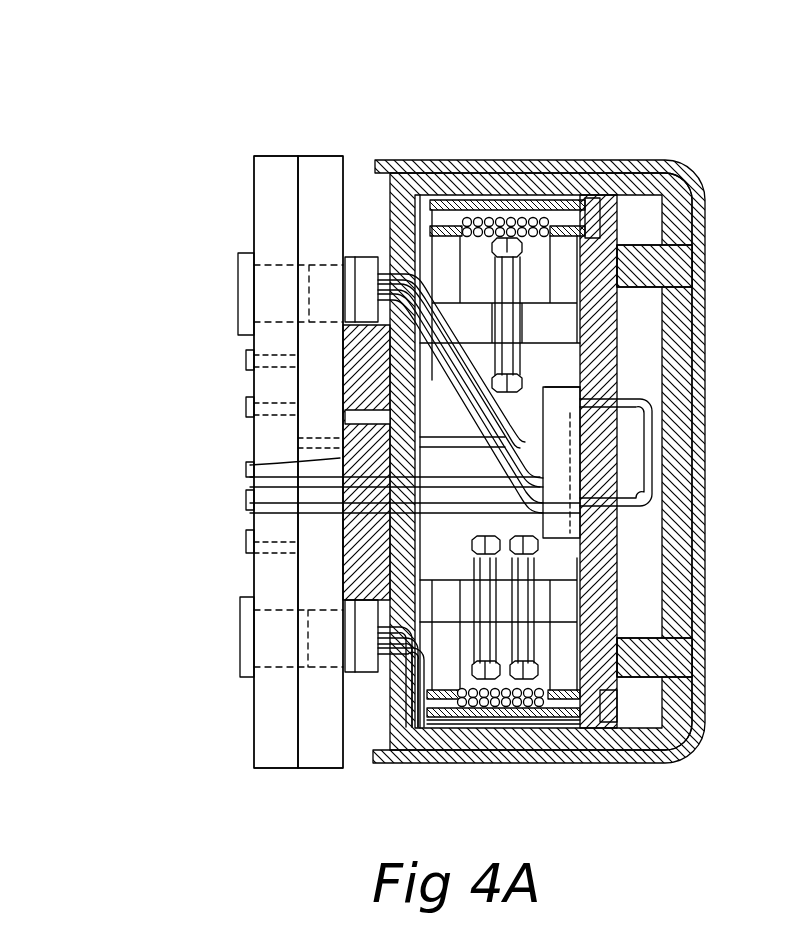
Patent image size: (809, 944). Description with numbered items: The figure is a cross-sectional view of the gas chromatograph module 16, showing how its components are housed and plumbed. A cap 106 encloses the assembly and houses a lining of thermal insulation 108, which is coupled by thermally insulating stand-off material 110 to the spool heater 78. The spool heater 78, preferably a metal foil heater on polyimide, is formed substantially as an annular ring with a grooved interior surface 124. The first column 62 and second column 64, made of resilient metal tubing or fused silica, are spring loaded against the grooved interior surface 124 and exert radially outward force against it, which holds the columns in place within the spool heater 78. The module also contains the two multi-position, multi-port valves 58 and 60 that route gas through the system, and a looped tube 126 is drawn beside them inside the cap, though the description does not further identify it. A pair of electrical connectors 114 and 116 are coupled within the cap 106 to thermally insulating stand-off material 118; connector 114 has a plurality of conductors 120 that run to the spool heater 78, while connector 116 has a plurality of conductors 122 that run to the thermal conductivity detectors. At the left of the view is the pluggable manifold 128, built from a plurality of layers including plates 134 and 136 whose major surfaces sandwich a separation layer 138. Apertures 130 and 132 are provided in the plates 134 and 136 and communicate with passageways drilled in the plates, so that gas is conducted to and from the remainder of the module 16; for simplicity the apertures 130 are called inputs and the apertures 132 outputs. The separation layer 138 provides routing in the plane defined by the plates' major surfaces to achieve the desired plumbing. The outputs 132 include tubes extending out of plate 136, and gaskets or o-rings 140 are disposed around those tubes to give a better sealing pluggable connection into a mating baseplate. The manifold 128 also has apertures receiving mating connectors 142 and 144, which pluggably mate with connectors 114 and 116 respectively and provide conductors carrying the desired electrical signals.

The gas chromatograph module 16 is at (544, 112).
The multi-position, multi-port valve 58 is at (582, 439).
The multi-position, multi-port valve 60 is at (610, 501).
The first column 62 is at (490, 212).
The second column 64 is at (585, 205).
The spool heater 78 is at (612, 705).
The cap 106 is at (702, 219).
The thermal insulation 108 is at (688, 339).
The thermally insulating stand-off material 110 is at (664, 269).
The electrical connector 114 is at (365, 672).
The electrical connector 116 is at (375, 260).
The thermally insulating stand-off material 118 is at (375, 381).
The conductors 120 is at (400, 754).
The conductors 122 is at (400, 262).
The grooved interior surface 124 is at (535, 720).
The tube loop 126 is at (650, 474).
The pluggable manifold 128 is at (283, 151).
The apertures 130 is at (260, 471).
The apertures 132 is at (246, 326).
The plate 134 is at (305, 156).
The plate 136 is at (265, 155).
The separation layer 138 is at (298, 156).
The gaskets or o-rings 140 is at (250, 471).
The mating connector 142 is at (275, 661).
The mating connector 144 is at (275, 271).